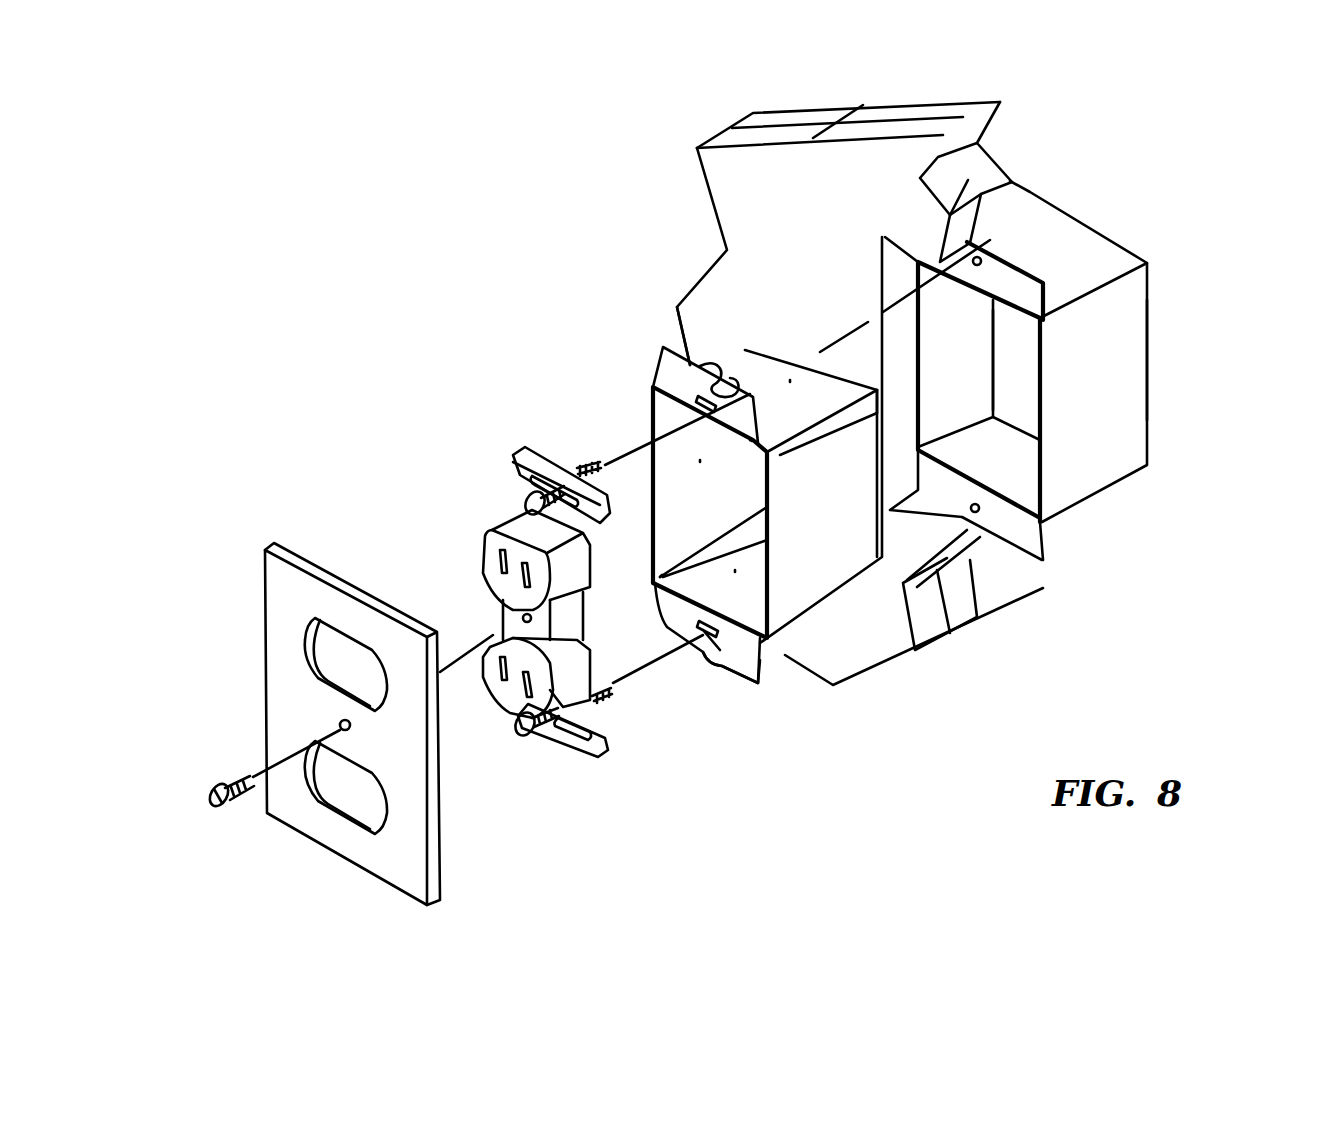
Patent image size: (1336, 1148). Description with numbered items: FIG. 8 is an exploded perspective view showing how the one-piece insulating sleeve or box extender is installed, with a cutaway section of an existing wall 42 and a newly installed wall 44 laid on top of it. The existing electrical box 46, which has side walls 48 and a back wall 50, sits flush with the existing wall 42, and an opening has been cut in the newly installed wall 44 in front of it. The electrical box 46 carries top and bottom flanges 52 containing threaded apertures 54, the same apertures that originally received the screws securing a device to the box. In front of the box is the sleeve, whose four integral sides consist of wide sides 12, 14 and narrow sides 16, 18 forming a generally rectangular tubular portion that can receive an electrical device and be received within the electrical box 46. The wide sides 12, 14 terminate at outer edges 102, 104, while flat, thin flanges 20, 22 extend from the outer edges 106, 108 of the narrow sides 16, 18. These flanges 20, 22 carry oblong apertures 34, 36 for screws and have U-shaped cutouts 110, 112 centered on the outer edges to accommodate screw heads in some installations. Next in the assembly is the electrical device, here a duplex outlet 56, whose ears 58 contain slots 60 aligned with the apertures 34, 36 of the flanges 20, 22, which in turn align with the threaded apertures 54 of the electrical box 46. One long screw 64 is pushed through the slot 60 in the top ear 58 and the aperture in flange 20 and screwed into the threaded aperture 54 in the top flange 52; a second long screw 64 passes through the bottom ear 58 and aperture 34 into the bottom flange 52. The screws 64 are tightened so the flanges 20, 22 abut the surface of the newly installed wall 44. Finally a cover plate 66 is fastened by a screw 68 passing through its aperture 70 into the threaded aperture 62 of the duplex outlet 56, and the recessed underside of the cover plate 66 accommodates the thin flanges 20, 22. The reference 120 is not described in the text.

The wide side 12 is at (749, 511).
The wide side 14 is at (742, 493).
The narrow side 16 is at (755, 603).
The narrow side 18 is at (814, 410).
The flange 20 is at (698, 628).
The flange 22 is at (697, 393).
The aperture 34 is at (712, 656).
The aperture 36 is at (728, 360).
The existing wall 42 is at (980, 163).
The newly installed wall 44 is at (838, 200).
The existing electrical box 46 is at (1091, 393).
The side walls 48 is at (1098, 272).
The back wall 50 is at (1030, 398).
The flange 52 is at (1023, 298).
The threaded aperture 54 is at (983, 258).
The duplex outlet 56 is at (512, 603).
The ear 58 is at (595, 530).
The slot 60 is at (520, 480).
The threaded aperture 62 is at (520, 617).
The long screw 64 is at (523, 505).
The cover plate 66 is at (408, 750).
The screw 68 is at (217, 783).
The aperture 70 is at (340, 727).
The outer edge 102 is at (770, 483).
The outer edge 104 is at (653, 417).
The outer edge 106 is at (660, 577).
The outer edge 108 is at (750, 440).
The U-shaped cutout 110 is at (757, 684).
The U-shaped cutout 112 is at (713, 360).
The back wall 120 is at (827, 363).